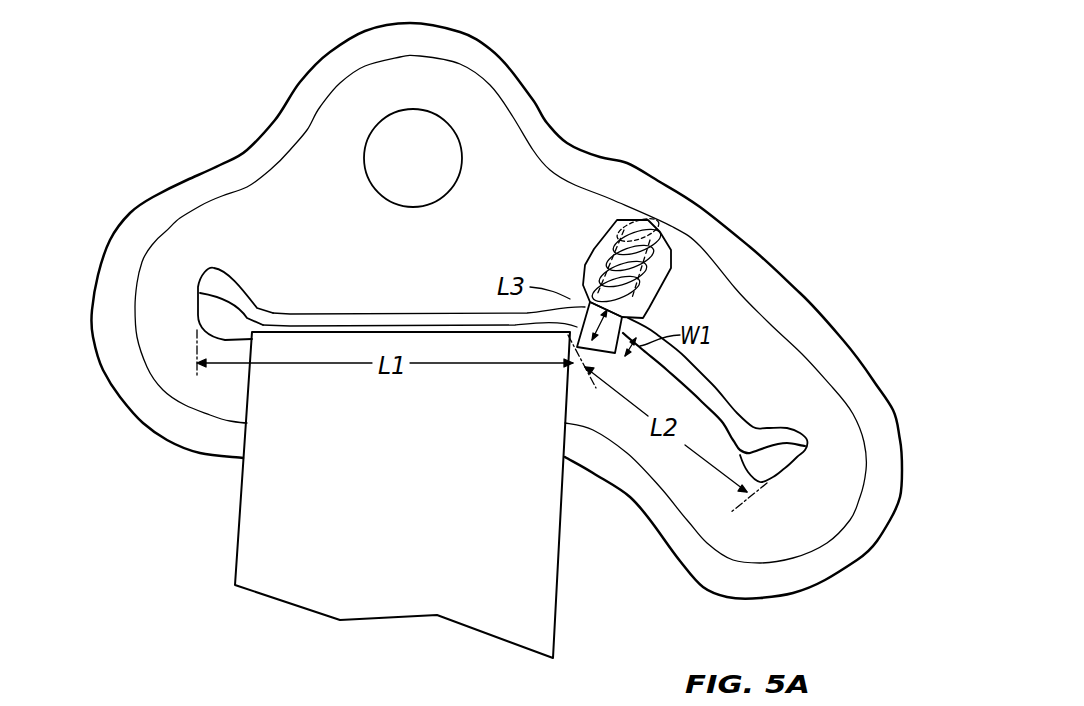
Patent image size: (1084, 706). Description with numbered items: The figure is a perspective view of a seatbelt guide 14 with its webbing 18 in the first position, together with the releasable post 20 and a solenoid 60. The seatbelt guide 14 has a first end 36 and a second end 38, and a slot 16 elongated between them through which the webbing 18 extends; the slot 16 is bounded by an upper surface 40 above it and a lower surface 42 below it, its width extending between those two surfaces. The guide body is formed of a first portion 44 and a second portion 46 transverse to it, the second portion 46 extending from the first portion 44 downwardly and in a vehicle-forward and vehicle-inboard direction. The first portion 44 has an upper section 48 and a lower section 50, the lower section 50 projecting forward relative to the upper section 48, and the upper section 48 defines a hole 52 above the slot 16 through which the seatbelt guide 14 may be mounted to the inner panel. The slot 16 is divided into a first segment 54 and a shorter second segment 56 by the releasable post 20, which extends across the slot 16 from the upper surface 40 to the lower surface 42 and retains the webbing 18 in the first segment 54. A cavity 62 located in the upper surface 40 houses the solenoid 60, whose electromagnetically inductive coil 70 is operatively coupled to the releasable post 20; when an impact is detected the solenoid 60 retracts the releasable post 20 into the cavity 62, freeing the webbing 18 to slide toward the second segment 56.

The seatbelt guide 14 is at (745, 125).
The slot 16 is at (223, 320).
The webbing 18 is at (268, 547).
The releasable post 20 is at (640, 335).
The first end 36 is at (170, 353).
The second end 38 is at (817, 510).
The upper surface 40 is at (319, 318).
The lower surface 42 is at (237, 337).
The first portion 44 is at (367, 233).
The second portion 46 is at (797, 393).
The upper section 48 is at (303, 180).
The lower section 50 is at (160, 300).
The hole 52 is at (430, 153).
The first segment 54 is at (435, 312).
The second segment 56 is at (700, 380).
The solenoid 60 is at (590, 250).
The cavity 62 is at (668, 233).
The electromagnetically inductive coil 70 is at (627, 247).